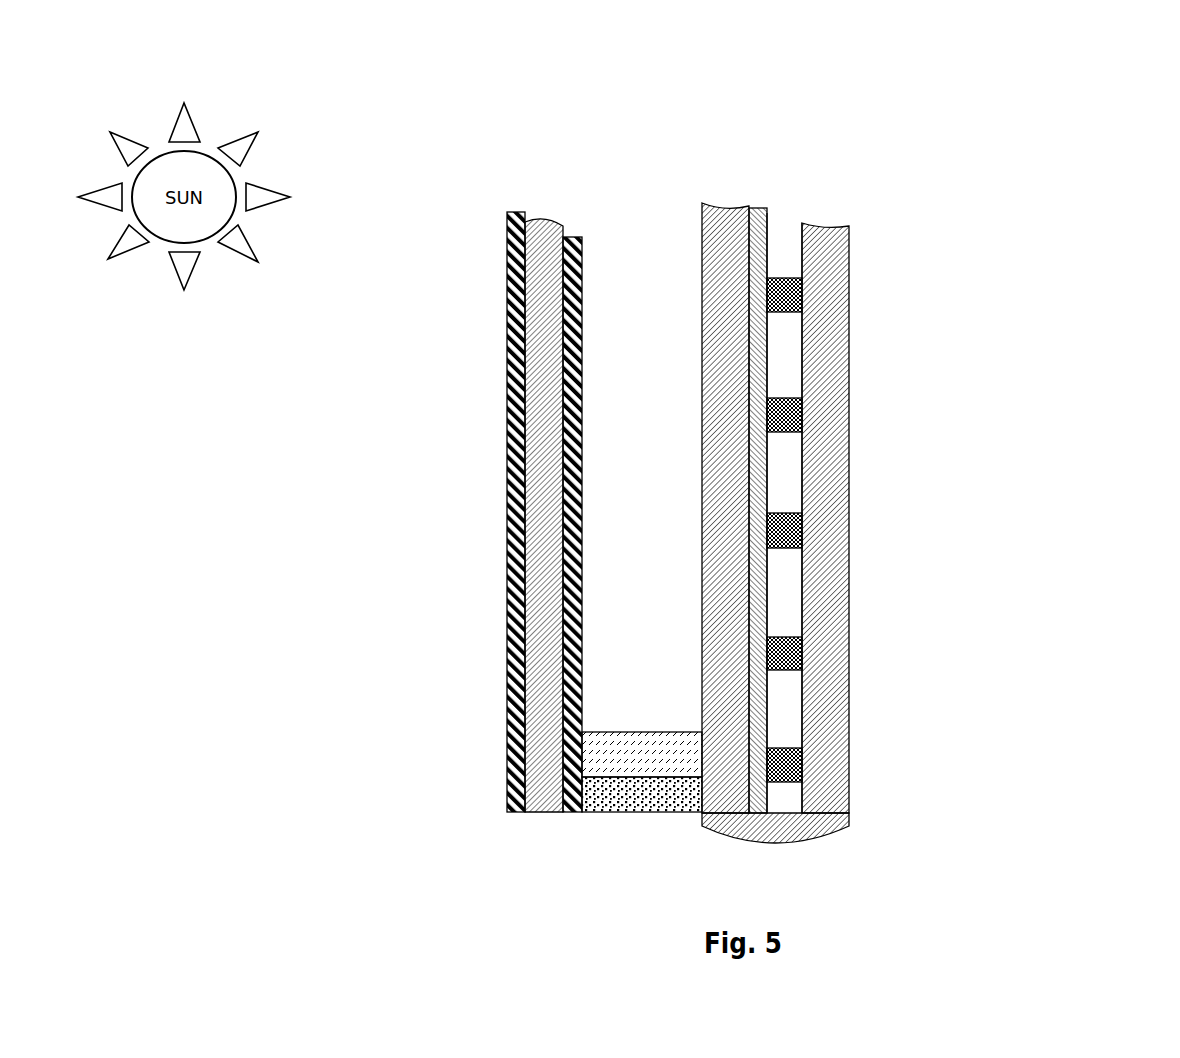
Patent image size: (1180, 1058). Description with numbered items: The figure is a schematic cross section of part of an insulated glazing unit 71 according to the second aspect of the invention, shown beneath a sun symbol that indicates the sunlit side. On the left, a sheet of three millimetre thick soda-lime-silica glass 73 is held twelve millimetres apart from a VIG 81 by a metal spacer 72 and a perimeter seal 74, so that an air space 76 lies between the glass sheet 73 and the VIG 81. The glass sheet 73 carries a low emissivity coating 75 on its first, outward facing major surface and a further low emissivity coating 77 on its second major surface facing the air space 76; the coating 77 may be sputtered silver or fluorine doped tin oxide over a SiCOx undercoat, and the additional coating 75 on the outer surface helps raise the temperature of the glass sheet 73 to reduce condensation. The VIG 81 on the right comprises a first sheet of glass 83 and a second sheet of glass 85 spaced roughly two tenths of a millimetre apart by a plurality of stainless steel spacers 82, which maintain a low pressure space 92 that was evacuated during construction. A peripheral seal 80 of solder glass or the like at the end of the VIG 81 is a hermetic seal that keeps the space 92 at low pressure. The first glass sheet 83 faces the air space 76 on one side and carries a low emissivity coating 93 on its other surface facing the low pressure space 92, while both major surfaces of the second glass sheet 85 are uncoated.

The insulated glazing unit 71 is at (993, 222).
The metal spacer 72 is at (678, 748).
The sheet of soda-lime-silica glass 73 is at (543, 225).
The perimeter seal 74 is at (650, 800).
The low emissivity coating 75 is at (515, 352).
The air space 76 is at (624, 282).
The low emissivity coating 77 is at (577, 412).
The peripheral seal 80 is at (847, 828).
The VIG 81 is at (816, 426).
The stainless steel spacers 82 is at (790, 405).
The first sheet of glass 83 is at (728, 246).
The second sheet of glass 85 is at (832, 295).
The low pressure space 92 is at (783, 218).
The low emissivity coating 93 is at (753, 208).